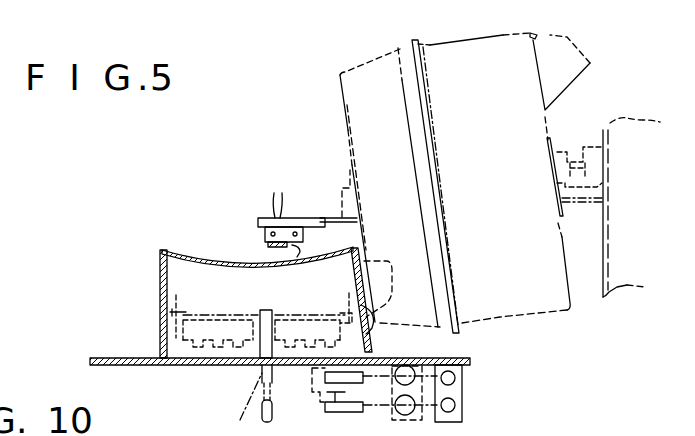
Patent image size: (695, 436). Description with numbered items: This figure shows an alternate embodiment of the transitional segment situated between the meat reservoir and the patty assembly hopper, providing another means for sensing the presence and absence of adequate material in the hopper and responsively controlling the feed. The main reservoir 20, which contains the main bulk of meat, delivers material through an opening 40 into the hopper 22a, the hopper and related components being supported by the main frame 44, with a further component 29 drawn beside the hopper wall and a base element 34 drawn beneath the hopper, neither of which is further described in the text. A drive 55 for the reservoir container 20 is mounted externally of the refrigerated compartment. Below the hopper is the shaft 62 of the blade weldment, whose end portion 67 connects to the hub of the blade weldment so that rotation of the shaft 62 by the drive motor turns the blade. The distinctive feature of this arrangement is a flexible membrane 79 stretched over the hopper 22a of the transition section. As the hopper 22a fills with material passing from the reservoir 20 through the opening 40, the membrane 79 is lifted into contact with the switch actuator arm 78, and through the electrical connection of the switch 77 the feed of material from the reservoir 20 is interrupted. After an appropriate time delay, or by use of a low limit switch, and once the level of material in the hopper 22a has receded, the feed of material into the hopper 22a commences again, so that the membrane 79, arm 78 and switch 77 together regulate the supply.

The main reservoir 20 is at (397, 62).
The hopper 22a is at (160, 313).
The hinge pad 29 is at (391, 290).
The base plate 34 is at (137, 356).
The opening 40 is at (372, 325).
The main frame 44 is at (447, 357).
The drive 55 is at (638, 170).
The shaft 62 is at (257, 413).
The end portion 67 is at (253, 380).
The switch 77 is at (258, 227).
The switch actuator arm 78 is at (307, 248).
The flexible membrane 79 is at (203, 257).